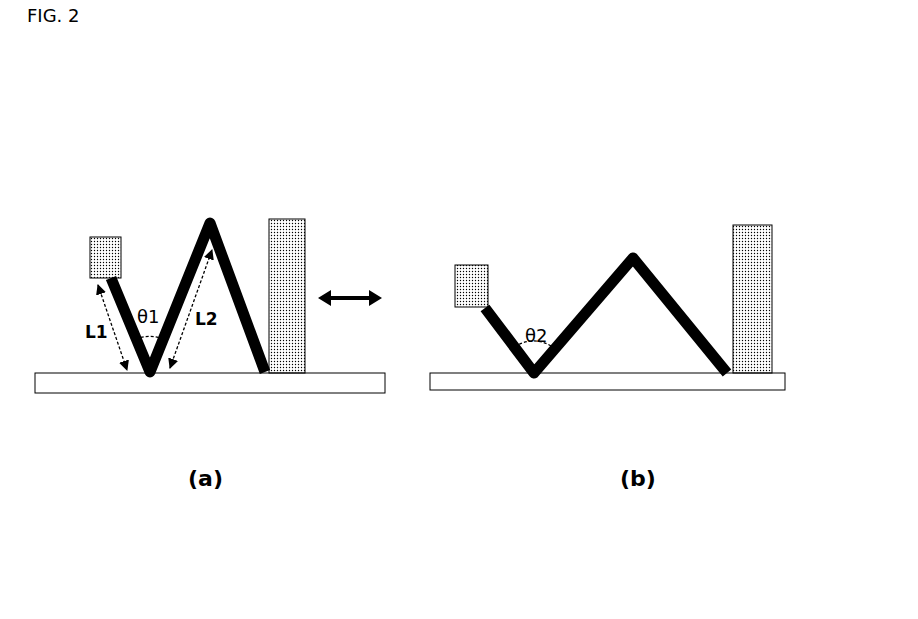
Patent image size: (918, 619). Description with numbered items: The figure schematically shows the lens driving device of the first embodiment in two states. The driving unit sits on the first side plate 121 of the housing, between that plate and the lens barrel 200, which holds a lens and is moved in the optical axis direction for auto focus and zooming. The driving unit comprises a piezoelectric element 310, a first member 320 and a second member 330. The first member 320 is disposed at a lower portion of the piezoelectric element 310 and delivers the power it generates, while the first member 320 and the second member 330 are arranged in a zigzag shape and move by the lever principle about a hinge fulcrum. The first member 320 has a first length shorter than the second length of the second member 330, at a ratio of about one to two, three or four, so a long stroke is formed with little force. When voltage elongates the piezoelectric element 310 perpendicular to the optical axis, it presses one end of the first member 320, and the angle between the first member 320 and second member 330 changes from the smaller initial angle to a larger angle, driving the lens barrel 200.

The first side plate 121 is at (353, 393).
The lens barrel 200 is at (298, 220).
The piezoelectric element 310 is at (95, 237).
The first member 320 is at (127, 297).
The second member 330 is at (225, 175).